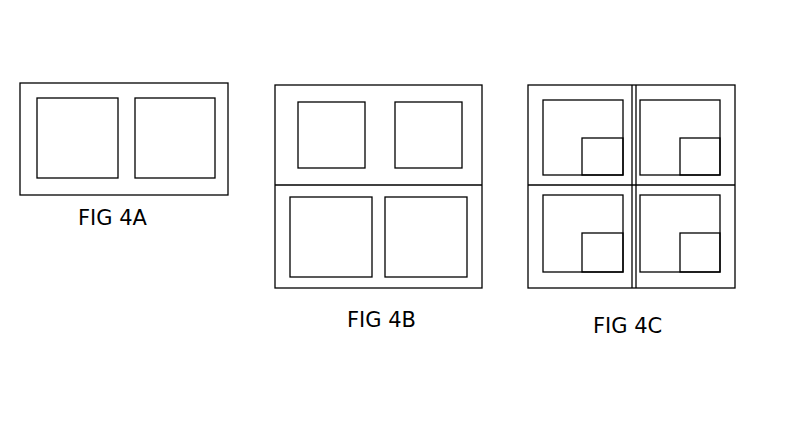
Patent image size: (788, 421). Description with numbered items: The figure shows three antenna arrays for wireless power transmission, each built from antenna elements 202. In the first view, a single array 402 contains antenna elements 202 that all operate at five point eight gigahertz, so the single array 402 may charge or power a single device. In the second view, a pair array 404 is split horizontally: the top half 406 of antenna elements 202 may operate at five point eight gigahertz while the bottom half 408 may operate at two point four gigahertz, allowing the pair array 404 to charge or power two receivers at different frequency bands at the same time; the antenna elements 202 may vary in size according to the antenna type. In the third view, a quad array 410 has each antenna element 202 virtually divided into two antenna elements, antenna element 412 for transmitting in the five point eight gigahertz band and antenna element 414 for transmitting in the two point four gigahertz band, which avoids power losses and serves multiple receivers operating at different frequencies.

In FIG. 4A, the single array 402 is at (128, 83).
In FIG. 4A, the antenna element 202 is at (195, 130).
In FIG. 4B, the antenna element 202 is at (325, 243).
In FIG. 4B, the pair array 404 is at (380, 85).
In FIG. 4B, the top half 406 is at (485, 133).
In FIG. 4B, the bottom half 408 is at (483, 230).
In FIG. 4C, the quad array 410 is at (700, 83).
In FIG. 4C, the antenna element 412 is at (703, 260).
In FIG. 4C, the antenna element 414 is at (585, 118).